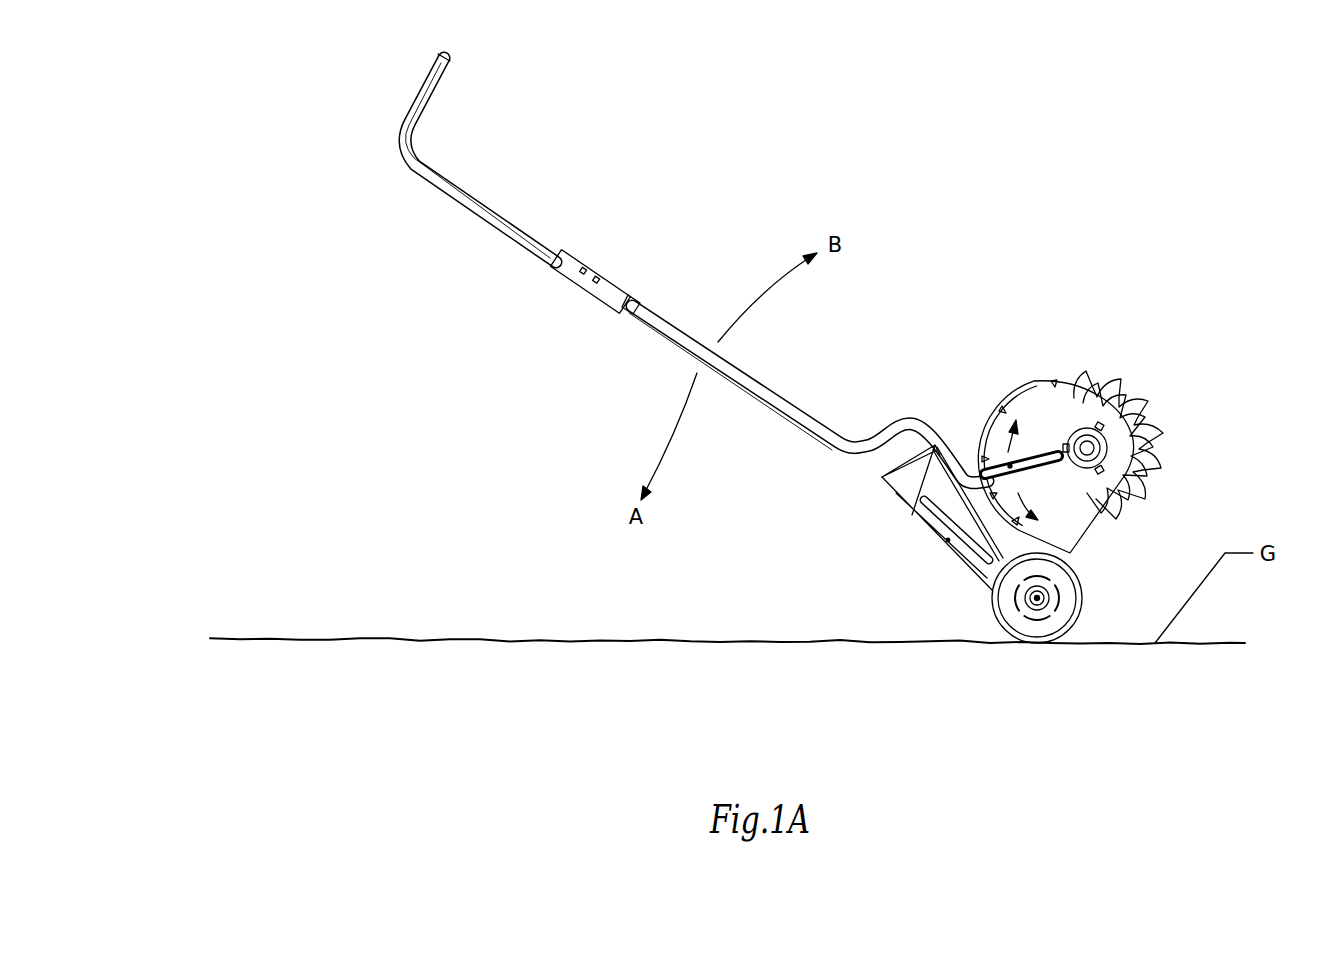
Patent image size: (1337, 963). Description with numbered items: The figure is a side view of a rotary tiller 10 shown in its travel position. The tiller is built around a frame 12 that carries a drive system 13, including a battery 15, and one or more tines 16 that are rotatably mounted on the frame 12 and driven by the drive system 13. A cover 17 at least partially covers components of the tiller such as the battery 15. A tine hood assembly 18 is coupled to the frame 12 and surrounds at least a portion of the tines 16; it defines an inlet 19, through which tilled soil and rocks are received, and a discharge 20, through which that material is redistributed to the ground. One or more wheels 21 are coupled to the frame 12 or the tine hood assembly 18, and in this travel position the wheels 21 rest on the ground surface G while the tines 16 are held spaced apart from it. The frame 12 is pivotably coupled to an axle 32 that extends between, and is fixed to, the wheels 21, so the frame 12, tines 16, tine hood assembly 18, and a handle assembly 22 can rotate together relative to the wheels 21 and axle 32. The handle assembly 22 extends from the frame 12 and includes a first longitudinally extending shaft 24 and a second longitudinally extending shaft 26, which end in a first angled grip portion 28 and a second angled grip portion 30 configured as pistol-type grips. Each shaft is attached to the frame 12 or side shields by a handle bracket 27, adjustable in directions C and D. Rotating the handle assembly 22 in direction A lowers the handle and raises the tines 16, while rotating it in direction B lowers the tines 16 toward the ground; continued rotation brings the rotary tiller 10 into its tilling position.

The rotary tiller 10 is at (1268, 152).
The frame 12 is at (977, 508).
The drive system 13 is at (882, 479).
The battery 15 is at (948, 537).
The tines 16 is at (1107, 322).
The cover 17 is at (938, 556).
The tine hood assembly 18 is at (998, 395).
The inlet 19 is at (1033, 380).
The discharge 20 is at (1092, 550).
The wheels 21 is at (993, 606).
The handle assembly 22 is at (668, 307).
The first longitudinally extending shaft 24 is at (495, 204).
The second longitudinally extending shaft 26 is at (480, 222).
The handle bracket 27 is at (1043, 447).
The first angled grip portion 28 is at (446, 77).
The second angled grip portion 30 is at (422, 80).
The axle 32 is at (1037, 600).